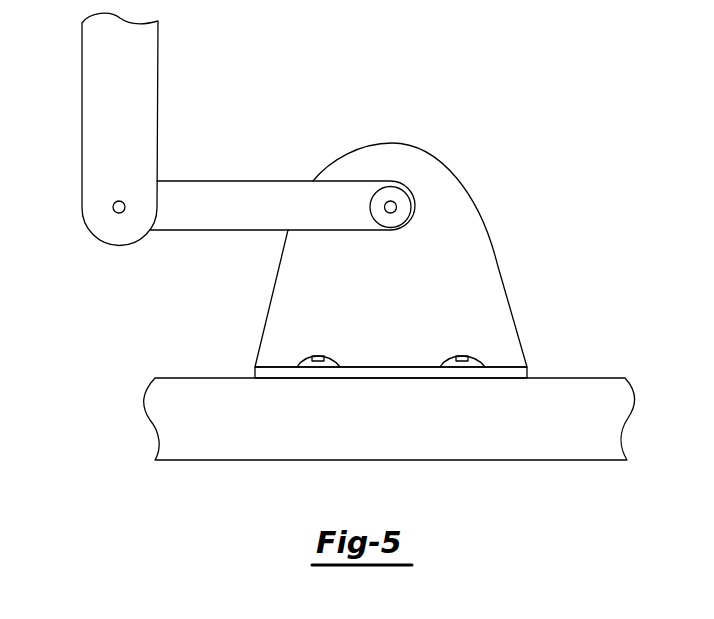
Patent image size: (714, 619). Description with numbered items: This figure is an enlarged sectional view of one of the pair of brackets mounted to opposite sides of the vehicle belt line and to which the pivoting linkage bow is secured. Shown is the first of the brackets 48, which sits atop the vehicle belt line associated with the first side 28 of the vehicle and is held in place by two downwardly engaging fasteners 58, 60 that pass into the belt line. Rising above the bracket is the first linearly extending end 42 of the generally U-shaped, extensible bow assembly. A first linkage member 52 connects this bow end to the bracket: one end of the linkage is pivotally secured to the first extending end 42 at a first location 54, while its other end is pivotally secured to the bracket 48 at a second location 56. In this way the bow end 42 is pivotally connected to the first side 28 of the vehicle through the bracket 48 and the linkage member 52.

The first side 28 is at (173, 417).
The first linearly extending end 42 is at (95, 149).
The bracket 48 is at (493, 258).
The first linkage member 52 is at (222, 190).
The first location 54 is at (120, 213).
The second location 56 is at (393, 210).
The fastener 58 is at (318, 356).
The fastener 60 is at (462, 356).